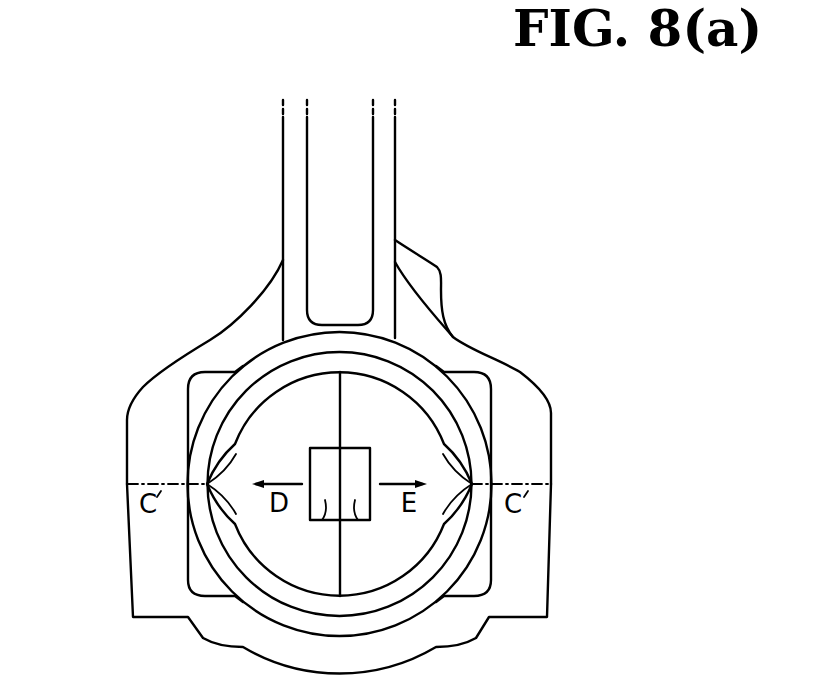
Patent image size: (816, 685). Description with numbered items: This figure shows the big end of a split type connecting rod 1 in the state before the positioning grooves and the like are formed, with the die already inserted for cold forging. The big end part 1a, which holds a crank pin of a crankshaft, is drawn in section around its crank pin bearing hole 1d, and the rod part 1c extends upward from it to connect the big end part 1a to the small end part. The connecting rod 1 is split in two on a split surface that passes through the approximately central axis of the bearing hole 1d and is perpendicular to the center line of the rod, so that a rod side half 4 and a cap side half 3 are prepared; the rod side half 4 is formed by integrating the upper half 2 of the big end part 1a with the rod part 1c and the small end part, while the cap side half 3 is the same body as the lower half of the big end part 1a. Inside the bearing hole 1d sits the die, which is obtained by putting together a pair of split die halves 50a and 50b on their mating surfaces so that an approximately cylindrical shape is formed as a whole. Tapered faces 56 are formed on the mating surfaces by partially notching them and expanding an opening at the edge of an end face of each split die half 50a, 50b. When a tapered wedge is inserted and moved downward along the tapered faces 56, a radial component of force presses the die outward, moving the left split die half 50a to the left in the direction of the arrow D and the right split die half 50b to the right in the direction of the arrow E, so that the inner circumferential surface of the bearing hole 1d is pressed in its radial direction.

The split type connecting rod 1 is at (74, 429).
The big end part 1a is at (642, 414).
The rod part 1c is at (395, 197).
The crank pin bearing hole 1d is at (312, 357).
The upper half of the big end part 2 is at (552, 437).
The cap side half 3 is at (122, 550).
The rod side half 4 is at (122, 432).
The split die half 50a is at (296, 474).
The split die half 50b is at (385, 474).
The tapered face 56 is at (322, 520).